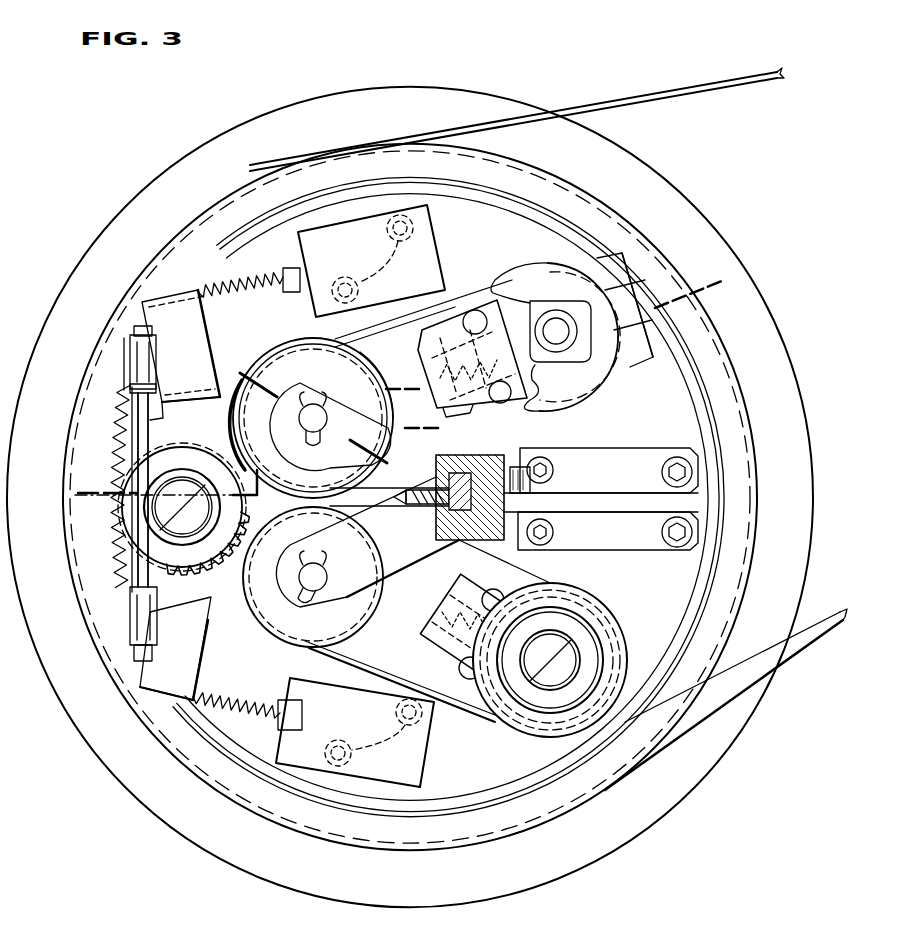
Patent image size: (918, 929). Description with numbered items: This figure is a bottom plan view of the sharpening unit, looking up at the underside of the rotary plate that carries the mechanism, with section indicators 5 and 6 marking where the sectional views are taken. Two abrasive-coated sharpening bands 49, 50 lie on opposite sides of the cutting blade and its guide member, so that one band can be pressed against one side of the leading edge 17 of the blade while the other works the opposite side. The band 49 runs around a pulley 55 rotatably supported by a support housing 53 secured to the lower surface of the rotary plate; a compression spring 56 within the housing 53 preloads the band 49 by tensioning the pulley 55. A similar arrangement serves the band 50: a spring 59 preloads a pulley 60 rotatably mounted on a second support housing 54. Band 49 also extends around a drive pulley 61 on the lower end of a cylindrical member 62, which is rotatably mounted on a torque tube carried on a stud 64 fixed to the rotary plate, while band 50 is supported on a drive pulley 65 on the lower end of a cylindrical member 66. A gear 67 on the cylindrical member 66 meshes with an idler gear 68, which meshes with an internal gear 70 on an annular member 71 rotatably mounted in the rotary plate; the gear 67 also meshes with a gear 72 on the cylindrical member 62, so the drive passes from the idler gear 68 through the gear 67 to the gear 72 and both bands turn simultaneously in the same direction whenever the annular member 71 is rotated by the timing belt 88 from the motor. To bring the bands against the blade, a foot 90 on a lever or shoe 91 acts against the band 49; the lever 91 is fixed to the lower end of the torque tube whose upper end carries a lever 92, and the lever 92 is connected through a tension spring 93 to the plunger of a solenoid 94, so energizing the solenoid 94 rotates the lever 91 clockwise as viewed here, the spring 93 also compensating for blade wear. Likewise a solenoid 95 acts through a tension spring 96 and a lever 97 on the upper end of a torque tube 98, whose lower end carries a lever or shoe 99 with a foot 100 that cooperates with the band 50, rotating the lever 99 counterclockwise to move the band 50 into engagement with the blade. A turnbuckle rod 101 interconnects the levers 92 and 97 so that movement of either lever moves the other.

The section line 5- 5 is at (90, 486).
The section line 6- 6 is at (398, 378).
The leading edge 17 is at (372, 518).
The sharpening band 49 is at (483, 293).
The sharpening band 50 is at (478, 712).
The support housing 53 is at (516, 405).
The support housing 54 is at (513, 577).
The pulley 55 is at (614, 384).
The compression spring 56 is at (556, 270).
The spring 59 is at (453, 690).
The pulley 60 is at (553, 738).
The drive pulley 61 is at (362, 377).
The cylindrical member 62 is at (292, 347).
The stud 64 is at (328, 418).
The drive pulley 65 is at (388, 598).
The cylindrical member 66 is at (289, 641).
The gear 67 is at (222, 590).
The idler gear 68 is at (226, 560).
The internal gear 70 is at (124, 420).
The annular member 71 is at (168, 716).
The gear 72 is at (276, 452).
The timing belt 88 is at (641, 99).
The foot 90 is at (470, 455).
The lever 91 is at (410, 456).
The lever 92 is at (212, 336).
The tension spring 93 is at (221, 288).
The solenoid 94 is at (446, 253).
The solenoid 95 is at (379, 785).
The tension spring 96 is at (252, 716).
The lever 97 is at (136, 680).
The torque tube 98 is at (328, 576).
The lever 99 is at (347, 606).
The foot 100 is at (407, 522).
The turnbuckle rod 101 is at (127, 572).